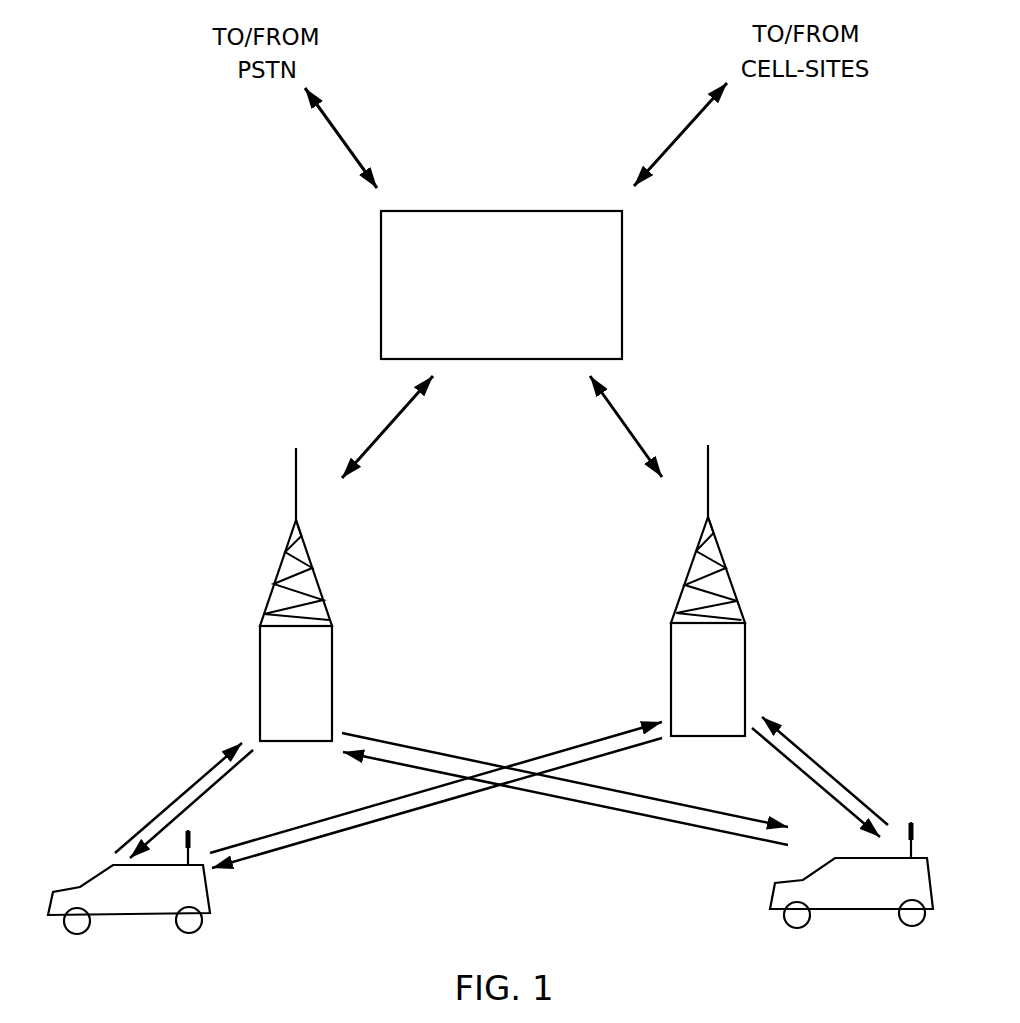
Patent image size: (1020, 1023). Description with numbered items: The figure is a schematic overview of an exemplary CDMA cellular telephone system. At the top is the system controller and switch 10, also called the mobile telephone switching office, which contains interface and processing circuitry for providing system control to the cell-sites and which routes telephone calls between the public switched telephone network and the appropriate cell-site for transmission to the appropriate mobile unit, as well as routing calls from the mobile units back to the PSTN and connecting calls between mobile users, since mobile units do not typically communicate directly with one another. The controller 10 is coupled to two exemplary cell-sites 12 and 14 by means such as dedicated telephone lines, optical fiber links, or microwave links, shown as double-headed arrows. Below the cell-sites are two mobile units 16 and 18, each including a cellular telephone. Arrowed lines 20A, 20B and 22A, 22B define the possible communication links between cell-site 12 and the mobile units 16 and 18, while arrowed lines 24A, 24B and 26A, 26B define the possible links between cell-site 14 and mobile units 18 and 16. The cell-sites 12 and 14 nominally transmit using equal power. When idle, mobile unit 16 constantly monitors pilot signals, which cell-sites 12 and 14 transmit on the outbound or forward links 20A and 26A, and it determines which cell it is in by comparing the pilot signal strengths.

The system controller and switch 10 is at (501, 211).
The cell-site 12 is at (281, 562).
The cell-site 14 is at (725, 563).
The mobile unit 16 is at (163, 920).
The mobile unit 18 is at (885, 910).
The forward communication link 20A is at (210, 792).
The communication link 20B is at (200, 783).
The communication link 22A is at (402, 743).
The communication link 22B is at (660, 818).
The communication link 24A is at (808, 755).
The communication link 24B is at (792, 762).
The forward communication link 26A is at (380, 822).
The communication link 26B is at (585, 745).